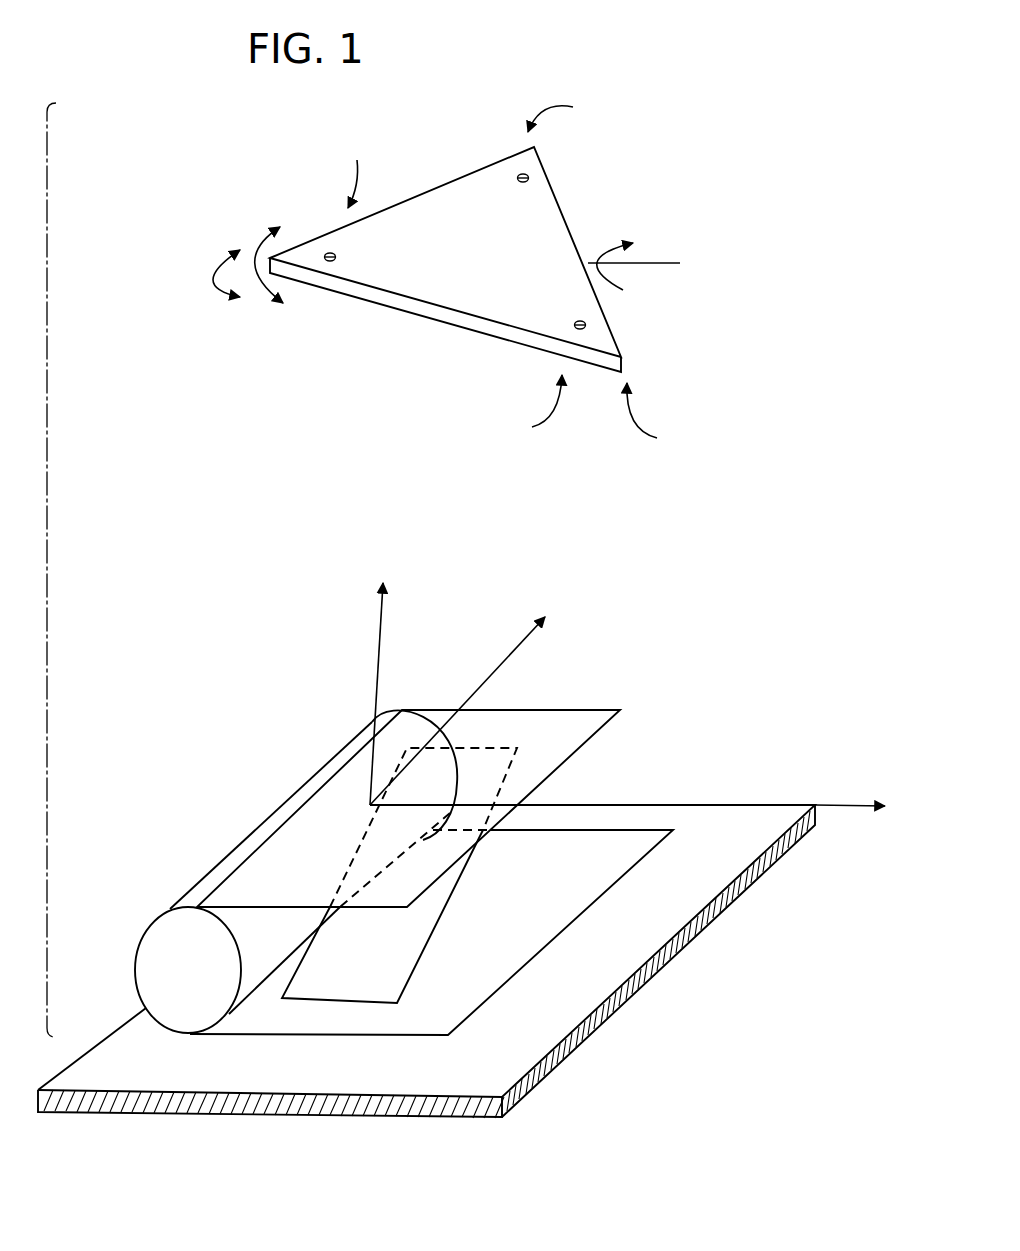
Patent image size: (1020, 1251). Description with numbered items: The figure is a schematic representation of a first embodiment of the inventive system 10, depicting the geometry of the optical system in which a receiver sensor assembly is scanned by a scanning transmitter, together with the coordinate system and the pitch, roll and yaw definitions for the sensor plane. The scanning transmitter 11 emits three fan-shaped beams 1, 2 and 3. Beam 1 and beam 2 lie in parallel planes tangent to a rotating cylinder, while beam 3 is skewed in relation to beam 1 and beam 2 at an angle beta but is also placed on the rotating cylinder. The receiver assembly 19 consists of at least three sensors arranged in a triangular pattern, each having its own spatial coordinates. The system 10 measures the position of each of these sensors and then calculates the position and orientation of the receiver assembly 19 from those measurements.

The inventive system 10 is at (180, 163).
The receiver assembly 19 is at (503, 85).
The scanning transmitter 11 is at (695, 970).
The fan-shaped beam 1 is at (408, 808).
The fan-shaped beam 2 is at (431, 924).
The fan-shaped beam 3 is at (399, 875).